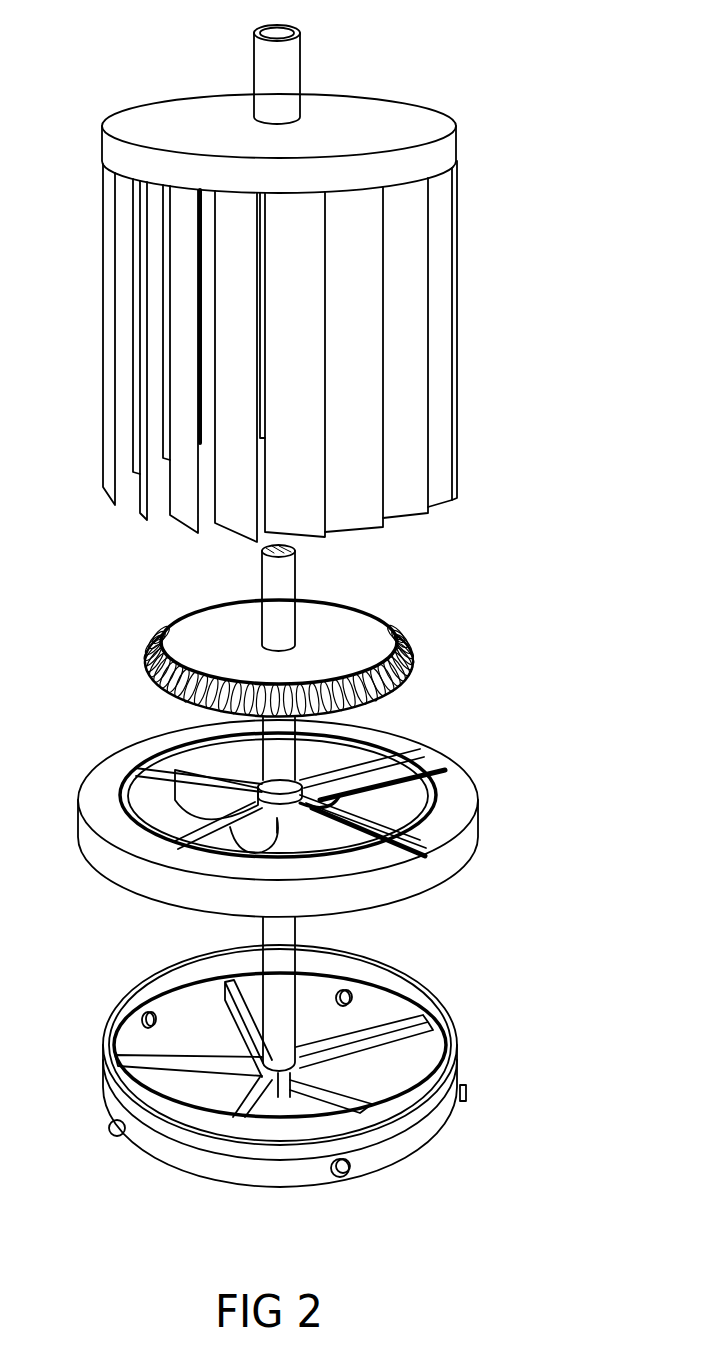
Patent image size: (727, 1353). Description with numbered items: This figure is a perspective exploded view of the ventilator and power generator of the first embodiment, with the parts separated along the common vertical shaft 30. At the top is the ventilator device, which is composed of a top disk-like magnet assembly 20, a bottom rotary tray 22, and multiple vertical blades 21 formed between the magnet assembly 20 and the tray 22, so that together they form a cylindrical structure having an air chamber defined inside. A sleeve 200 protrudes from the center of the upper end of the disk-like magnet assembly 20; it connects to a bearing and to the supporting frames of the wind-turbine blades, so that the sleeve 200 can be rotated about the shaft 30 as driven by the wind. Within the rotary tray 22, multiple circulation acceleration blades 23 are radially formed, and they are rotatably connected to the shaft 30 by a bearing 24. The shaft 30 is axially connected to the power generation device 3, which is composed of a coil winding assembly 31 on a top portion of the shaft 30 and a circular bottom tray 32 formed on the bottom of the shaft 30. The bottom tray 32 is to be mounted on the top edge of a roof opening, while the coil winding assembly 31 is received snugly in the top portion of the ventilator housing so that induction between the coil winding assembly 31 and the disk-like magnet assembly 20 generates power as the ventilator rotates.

The disk-like magnet assembly 20 is at (279, 298).
The sleeve 200 is at (287, 72).
The vertical blades 21 is at (237, 508).
The power generation device 3 is at (304, 888).
The shaft 30 is at (278, 957).
The coil winding assembly 31 is at (332, 620).
The rotary tray 22 is at (387, 892).
The circulation acceleration blades 23 is at (242, 840).
The bearing 24 is at (262, 790).
The circular bottom tray 32 is at (435, 1123).